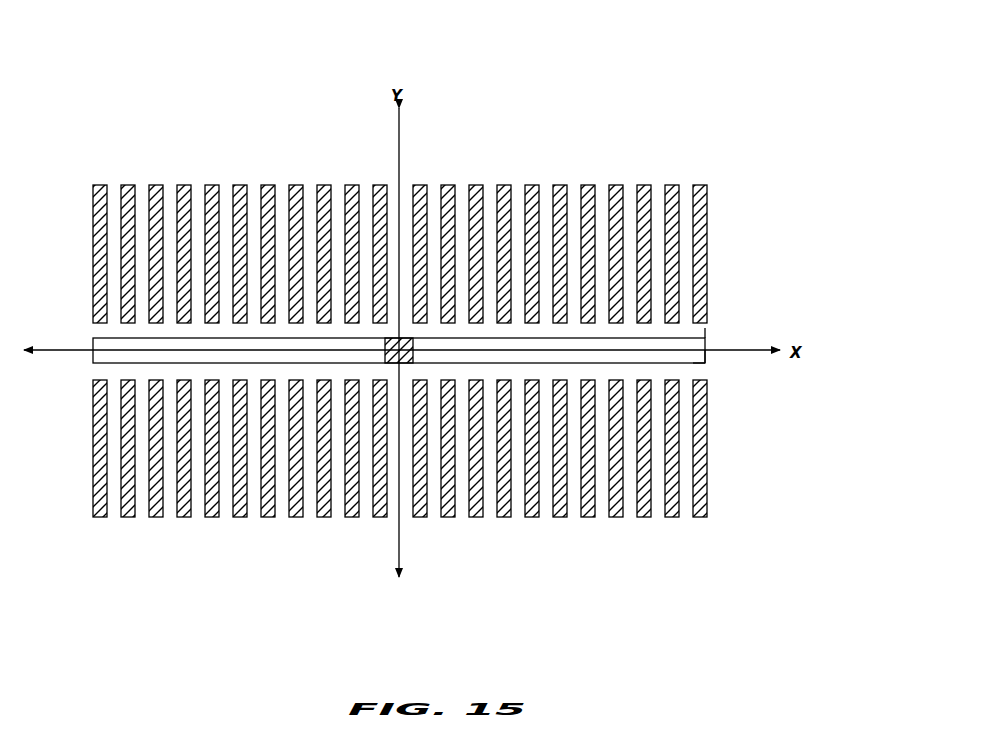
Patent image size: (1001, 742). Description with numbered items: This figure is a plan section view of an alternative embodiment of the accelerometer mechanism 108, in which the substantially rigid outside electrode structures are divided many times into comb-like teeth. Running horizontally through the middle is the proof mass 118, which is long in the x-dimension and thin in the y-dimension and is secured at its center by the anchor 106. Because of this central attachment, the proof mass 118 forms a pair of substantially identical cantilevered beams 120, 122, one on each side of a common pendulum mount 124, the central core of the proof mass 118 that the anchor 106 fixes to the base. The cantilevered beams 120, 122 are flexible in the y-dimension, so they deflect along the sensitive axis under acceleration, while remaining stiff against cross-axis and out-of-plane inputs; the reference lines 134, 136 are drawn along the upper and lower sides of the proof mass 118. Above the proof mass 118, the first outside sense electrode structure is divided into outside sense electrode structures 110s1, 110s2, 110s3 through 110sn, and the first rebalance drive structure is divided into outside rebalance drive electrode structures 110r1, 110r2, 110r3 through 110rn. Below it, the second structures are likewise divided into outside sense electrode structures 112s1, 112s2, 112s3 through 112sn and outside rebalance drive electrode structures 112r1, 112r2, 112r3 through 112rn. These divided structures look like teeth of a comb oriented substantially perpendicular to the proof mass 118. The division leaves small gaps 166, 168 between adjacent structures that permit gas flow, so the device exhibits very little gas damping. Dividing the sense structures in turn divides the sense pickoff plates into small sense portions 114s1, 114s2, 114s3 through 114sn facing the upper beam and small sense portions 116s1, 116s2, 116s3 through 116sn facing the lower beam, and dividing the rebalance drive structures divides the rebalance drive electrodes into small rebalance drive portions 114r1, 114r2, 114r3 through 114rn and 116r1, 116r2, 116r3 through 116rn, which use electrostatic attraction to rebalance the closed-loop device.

The accelerometer mechanism 108 is at (810, 296).
The proof mass 118 is at (740, 334).
The anchor 106 is at (388, 346).
The common pendulum mount 124 is at (383, 329).
The cantilevered beam 122 is at (93, 351).
The upper edge 134 is at (703, 330).
The cantilevered beam 120 is at (706, 354).
The lower edge 136 is at (704, 364).
The gap 166 is at (437, 181).
The gap 168 is at (436, 524).
The outside sense electrode structure 110s1 is at (418, 185).
The outside sense electrode structure 110s2 is at (447, 185).
The outside sense electrode structure 110s3 is at (475, 185).
The outside sense electrode structure 110sn is at (557, 185).
The outside rebalance drive electrode structure 110r1 is at (587, 185).
The outside rebalance drive electrode structure 110r2 is at (613, 185).
The outside rebalance drive electrode structure 110r3 is at (641, 185).
The outside rebalance drive electrode structure 110rn is at (695, 175).
The outside sense electrode structure 112s1 is at (420, 518).
The outside sense electrode structure 112s2 is at (447, 518).
The outside sense electrode structure 112s3 is at (475, 518).
The outside sense electrode structure 112sn is at (561, 518).
The outside rebalance drive electrode structure 112r1 is at (588, 518).
The outside rebalance drive electrode structure 112r2 is at (618, 518).
The outside rebalance drive electrode structure 112r3 is at (644, 518).
The outside rebalance drive electrode structure 112rn is at (698, 518).
The sense portion 114s1 is at (415, 318).
The sense portion 114s2 is at (444, 318).
The sense portion 114s3 is at (475, 318).
The sense portion 114sn is at (560, 318).
The rebalance drive portion 114r1 is at (586, 318).
The rebalance drive portion 114r2 is at (614, 318).
The rebalance drive portion 114r3 is at (642, 318).
The rebalance drive portion 114rn is at (694, 318).
The sense portion 116s1 is at (419, 384).
The sense portion 116s2 is at (447, 386).
The sense portion 116s3 is at (469, 388).
The sense portion 116sn is at (544, 388).
The rebalance drive portion 116r1 is at (586, 386).
The rebalance drive portion 116r2 is at (614, 386).
The rebalance drive portion 116r3 is at (641, 386).
The rebalance drive portion 116rn is at (695, 374).